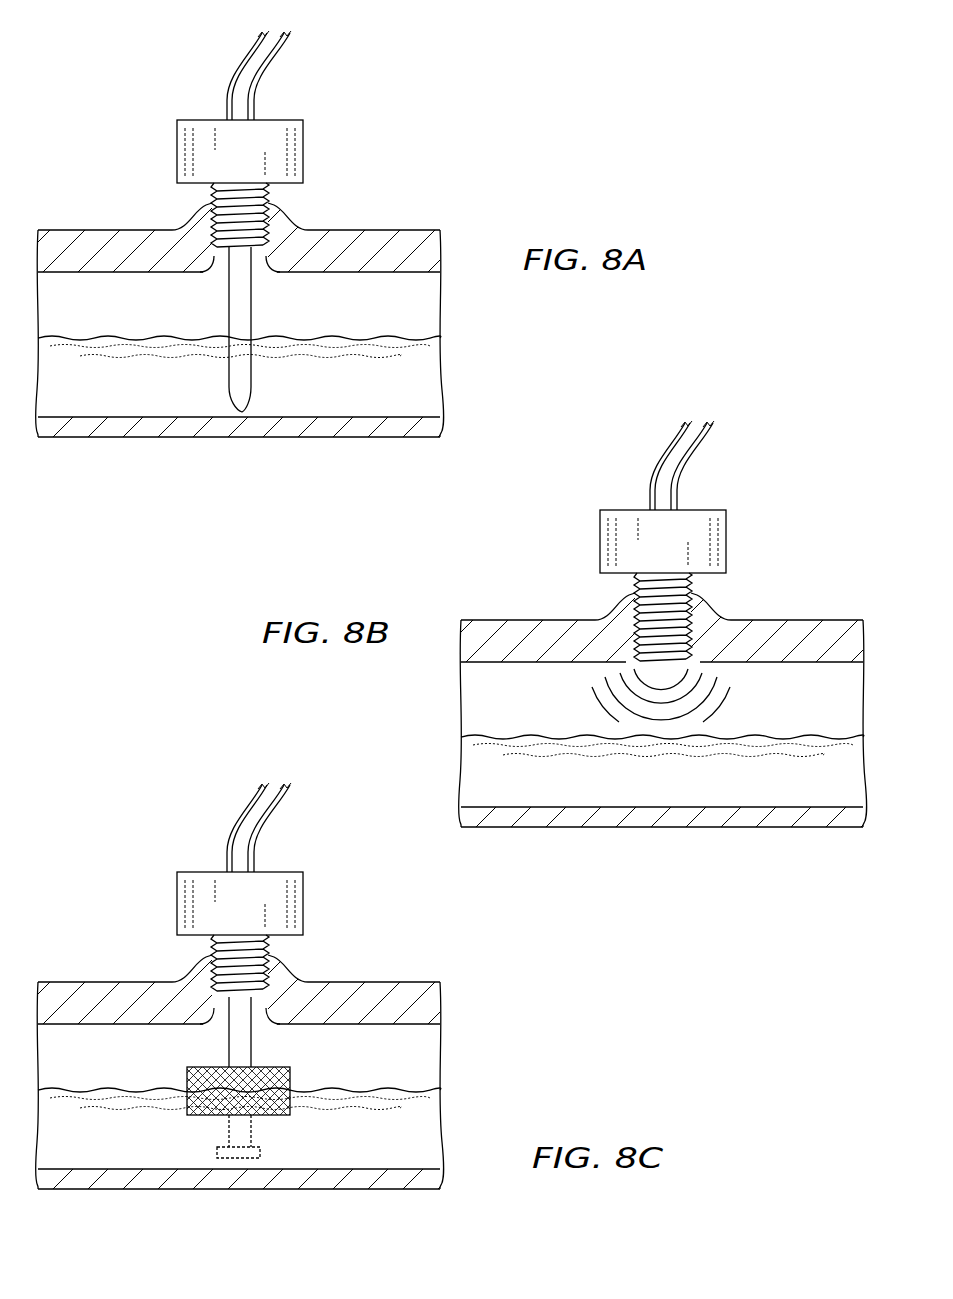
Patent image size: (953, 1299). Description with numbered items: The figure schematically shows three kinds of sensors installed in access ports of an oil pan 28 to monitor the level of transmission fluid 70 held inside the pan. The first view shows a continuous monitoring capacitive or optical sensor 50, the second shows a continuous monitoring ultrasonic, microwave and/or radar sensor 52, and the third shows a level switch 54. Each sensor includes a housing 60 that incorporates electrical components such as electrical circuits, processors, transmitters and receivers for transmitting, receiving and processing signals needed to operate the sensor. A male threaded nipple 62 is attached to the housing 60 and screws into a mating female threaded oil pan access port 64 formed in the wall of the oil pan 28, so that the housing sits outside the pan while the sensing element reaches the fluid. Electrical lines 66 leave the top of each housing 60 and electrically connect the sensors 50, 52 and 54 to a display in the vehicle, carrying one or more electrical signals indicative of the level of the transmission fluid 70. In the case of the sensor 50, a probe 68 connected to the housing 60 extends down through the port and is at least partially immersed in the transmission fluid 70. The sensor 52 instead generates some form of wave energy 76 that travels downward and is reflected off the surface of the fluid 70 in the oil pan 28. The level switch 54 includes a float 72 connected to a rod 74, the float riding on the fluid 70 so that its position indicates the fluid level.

In FIG. 8A, the oil pan 28 is at (158, 438).
In FIG. 8B, the oil pan 28 is at (583, 830).
In FIG. 8C, the oil pan 28 is at (158, 1190).
In FIG. 8A, the capacitive or optical sensor 50 is at (194, 139).
In FIG. 8B, the ultrasonic, microwave and/or radar sensor 52 is at (617, 541).
In FIG. 8C, the level switch 54 is at (193, 887).
In FIG. 8A, the housing 60 is at (177, 152).
In FIG. 8B, the housing 60 is at (600, 541).
In FIG. 8C, the housing 60 is at (177, 904).
In FIG. 8A, the male threaded nipple 62 is at (212, 188).
In FIG. 8B, the male threaded nipple 62 is at (635, 578).
In FIG. 8C, the male threaded nipple 62 is at (212, 940).
In FIG. 8A, the female threaded oil pan access port 64 is at (266, 266).
In FIG. 8B, the female threaded oil pan access port 64 is at (700, 640).
In FIG. 8C, the female threaded oil pan access port 64 is at (264, 1016).
In FIG. 8A, the electrical lines 66 is at (248, 59).
In FIG. 8B, the electrical lines 66 is at (672, 450).
In FIG. 8C, the electrical lines 66 is at (248, 811).
In FIG. 8A, the probe 68 is at (229, 310).
In FIG. 8A, the transmission fluid 70 is at (412, 337).
In FIG. 8B, the transmission fluid 70 is at (490, 737).
In FIG. 8C, the transmission fluid 70 is at (410, 1090).
In FIG. 8C, the float 72 is at (290, 1078).
In FIG. 8C, the rod 74 is at (229, 1052).
In FIG. 8B, the wave energy 76 is at (740, 696).